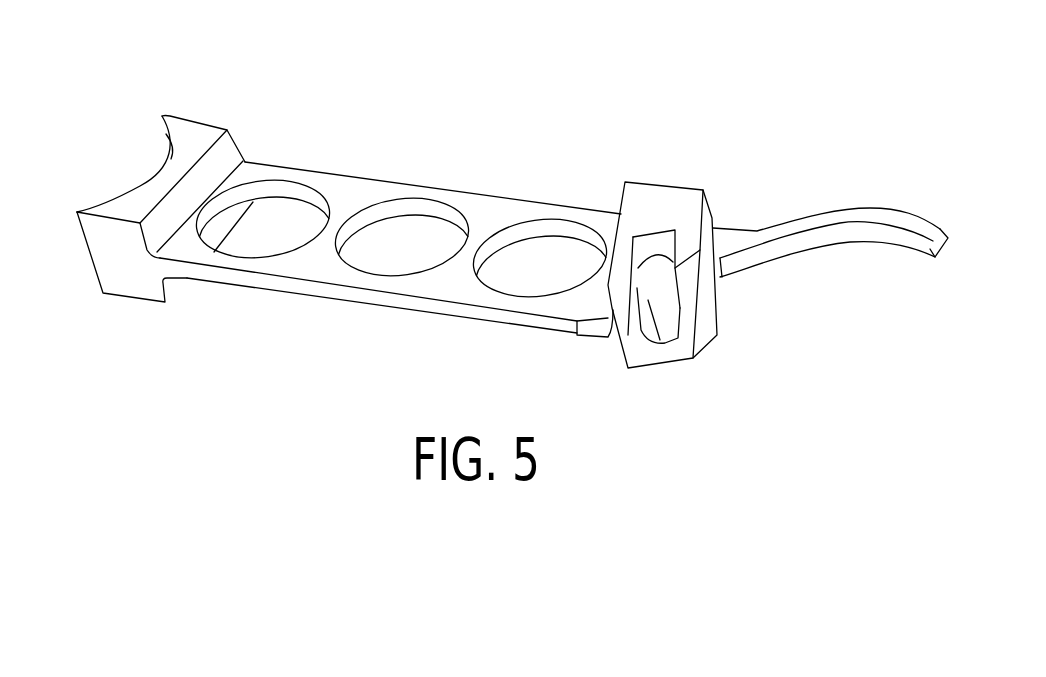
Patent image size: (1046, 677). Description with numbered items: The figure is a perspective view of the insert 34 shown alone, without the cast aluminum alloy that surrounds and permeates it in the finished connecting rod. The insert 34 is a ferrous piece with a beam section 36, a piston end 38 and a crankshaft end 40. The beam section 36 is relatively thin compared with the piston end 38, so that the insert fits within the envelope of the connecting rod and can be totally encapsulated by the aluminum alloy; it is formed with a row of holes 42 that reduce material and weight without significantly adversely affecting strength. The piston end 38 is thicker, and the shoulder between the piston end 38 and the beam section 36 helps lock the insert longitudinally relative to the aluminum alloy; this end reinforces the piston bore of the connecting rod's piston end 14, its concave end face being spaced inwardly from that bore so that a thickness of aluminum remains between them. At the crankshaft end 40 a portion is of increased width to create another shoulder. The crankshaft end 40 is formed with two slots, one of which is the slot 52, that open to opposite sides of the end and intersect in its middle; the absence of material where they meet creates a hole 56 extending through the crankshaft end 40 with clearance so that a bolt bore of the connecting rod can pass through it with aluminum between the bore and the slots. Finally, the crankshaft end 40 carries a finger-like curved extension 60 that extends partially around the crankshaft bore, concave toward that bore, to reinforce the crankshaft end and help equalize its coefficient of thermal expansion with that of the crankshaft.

The piston end 14 is at (113, 200).
The insert 34 is at (509, 191).
The beam section 36 is at (362, 178).
The piston end 38 is at (198, 122).
The crankshaft end 40 is at (669, 177).
The holes 42 is at (531, 296).
The slot 52 is at (624, 336).
The hole 56 is at (648, 300).
The curved extension 60 is at (853, 210).